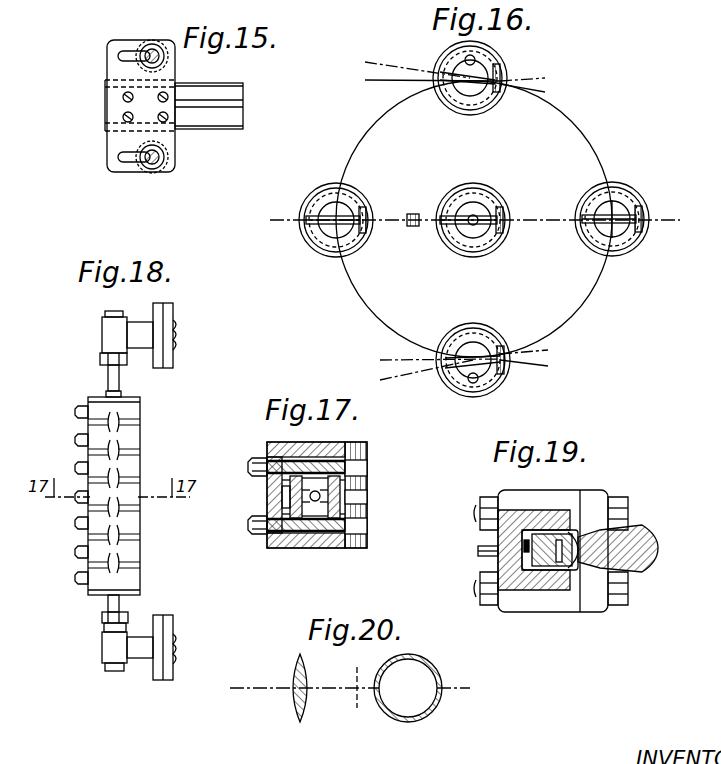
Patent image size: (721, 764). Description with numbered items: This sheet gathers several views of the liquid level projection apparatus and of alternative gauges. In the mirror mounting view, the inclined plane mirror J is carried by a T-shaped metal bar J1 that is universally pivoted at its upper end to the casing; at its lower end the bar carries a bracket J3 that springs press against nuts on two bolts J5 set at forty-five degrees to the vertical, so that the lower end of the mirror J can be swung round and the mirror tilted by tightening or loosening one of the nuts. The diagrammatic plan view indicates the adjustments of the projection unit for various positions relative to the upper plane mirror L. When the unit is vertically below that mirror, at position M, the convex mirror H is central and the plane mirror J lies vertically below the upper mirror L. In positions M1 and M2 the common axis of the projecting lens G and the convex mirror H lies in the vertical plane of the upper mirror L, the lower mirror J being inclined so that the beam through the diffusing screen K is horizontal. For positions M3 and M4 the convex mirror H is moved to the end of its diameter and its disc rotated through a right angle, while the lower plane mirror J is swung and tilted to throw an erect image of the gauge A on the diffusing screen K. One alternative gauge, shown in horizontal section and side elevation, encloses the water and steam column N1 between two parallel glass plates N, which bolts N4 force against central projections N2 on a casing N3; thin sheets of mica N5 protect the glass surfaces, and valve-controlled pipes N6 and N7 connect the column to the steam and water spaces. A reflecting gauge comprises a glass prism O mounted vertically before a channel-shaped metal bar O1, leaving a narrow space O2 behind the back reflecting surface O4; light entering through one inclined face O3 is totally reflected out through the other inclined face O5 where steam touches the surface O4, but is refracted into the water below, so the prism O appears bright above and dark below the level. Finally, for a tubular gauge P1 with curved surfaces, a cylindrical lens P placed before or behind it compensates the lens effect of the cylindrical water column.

In FIG. 15, the inclined plane mirror J is at (212, 129).
In FIG. 16, the inclined plane mirror J is at (450, 66).
In FIG. 15, the T-shaped metal bar J1 is at (225, 106).
In FIG. 15, the bracket J3 is at (125, 73).
In FIG. 15, the bolts J5 is at (152, 50).
In FIG. 16, the gauge A is at (410, 228).
In FIG. 16, the projection unit position M is at (473, 209).
In FIG. 16, the projection unit position M1 is at (320, 225).
In FIG. 16, the projection unit position M2 is at (620, 219).
In FIG. 16, the projection unit position M3 is at (455, 78).
In FIG. 16, the projection unit position M4 is at (464, 362).
In FIG. 16, the convex mirror H is at (470, 60).
In FIG. 16, the projecting lens G is at (460, 94).
In FIG. 16, the diffusing screen K is at (500, 86).
In FIG. 16, the upper plane mirror L is at (460, 240).
In FIG. 17, the glass plates N is at (296, 520).
In FIG. 17, the water and steam column N1 is at (360, 442).
In FIG. 17, the central projections N2 is at (292, 486).
In FIG. 17, the casing N3 is at (362, 550).
In FIG. 18, the casing N3 is at (100, 499).
In FIG. 17, the bolts N4 is at (259, 466).
In FIG. 18, the bolts N4 is at (85, 414).
In FIG. 17, the mica sheets N5 is at (352, 468).
In FIG. 18, the valve-controlled pipe N6 is at (115, 332).
In FIG. 18, the valve-controlled pipe N7 is at (113, 649).
In FIG. 19, the glass prism O is at (559, 566).
In FIG. 19, the channel-shaped metal bar O1 is at (498, 560).
In FIG. 19, the narrow space O2 is at (548, 566).
In FIG. 19, the inclined face O3 is at (582, 522).
In FIG. 19, the back reflecting surface O4 is at (574, 532).
In FIG. 19, the inclined face O5 is at (584, 572).
In FIG. 20, the cylindrical lens P is at (294, 674).
In FIG. 20, the tubular gauge P1 is at (436, 672).